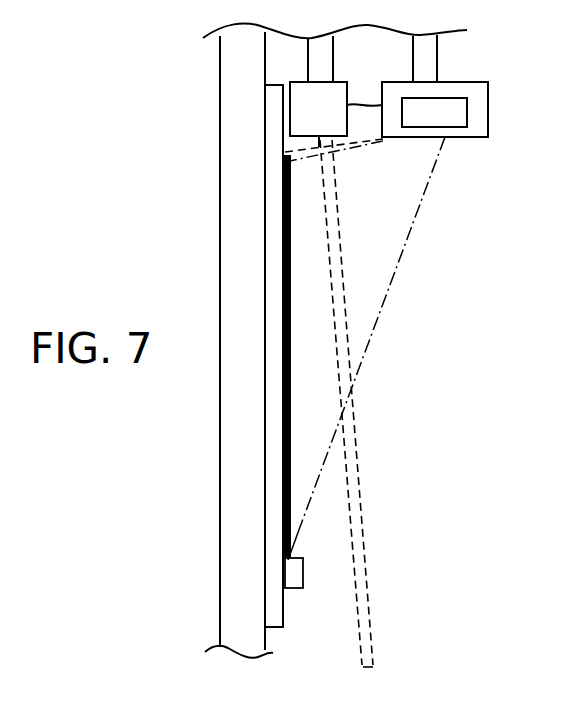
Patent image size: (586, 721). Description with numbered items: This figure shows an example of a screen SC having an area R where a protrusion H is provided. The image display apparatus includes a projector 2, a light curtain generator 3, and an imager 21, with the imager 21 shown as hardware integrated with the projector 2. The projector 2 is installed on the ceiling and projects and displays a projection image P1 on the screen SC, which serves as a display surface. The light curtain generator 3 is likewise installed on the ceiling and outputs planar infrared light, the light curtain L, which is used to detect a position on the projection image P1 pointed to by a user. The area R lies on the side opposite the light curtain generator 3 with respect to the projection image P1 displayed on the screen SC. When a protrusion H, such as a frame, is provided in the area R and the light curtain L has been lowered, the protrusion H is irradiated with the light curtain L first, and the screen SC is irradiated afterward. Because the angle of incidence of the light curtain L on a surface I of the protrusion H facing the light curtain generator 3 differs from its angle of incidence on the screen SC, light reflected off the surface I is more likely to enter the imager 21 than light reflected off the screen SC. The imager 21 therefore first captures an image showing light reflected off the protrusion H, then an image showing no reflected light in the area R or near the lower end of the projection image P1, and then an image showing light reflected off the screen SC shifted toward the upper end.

The projector 2 is at (470, 82).
The imager 21 is at (467, 113).
The light curtain generator 3 is at (340, 82).
The projection image P1 is at (291, 330).
The screen SC is at (287, 620).
The protrusion H is at (303, 583).
The surface I is at (289, 560).
The area R is at (284, 600).
The light curtain L is at (370, 607).